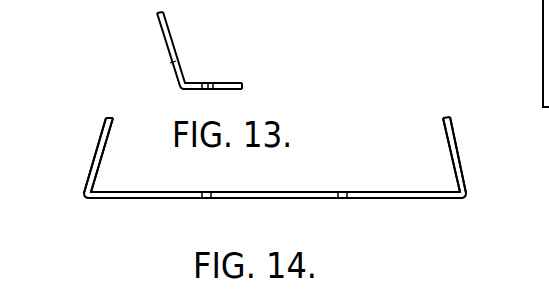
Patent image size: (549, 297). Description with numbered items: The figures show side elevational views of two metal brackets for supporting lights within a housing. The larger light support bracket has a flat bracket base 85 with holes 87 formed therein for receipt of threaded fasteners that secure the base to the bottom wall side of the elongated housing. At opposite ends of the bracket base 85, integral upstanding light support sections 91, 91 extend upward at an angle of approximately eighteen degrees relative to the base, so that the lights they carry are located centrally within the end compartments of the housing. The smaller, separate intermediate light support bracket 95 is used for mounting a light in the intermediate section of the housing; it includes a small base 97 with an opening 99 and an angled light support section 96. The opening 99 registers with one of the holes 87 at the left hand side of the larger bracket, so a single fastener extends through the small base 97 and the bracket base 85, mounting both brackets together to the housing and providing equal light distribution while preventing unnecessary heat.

In FIG. 14, the bracket base 85 is at (373, 198).
In FIG. 14, the holes 87 is at (202, 192).
In FIG. 14, the upstanding light support sections 91 is at (93, 164).
In FIG. 13, the intermediate light support bracket 95 is at (194, 66).
In FIG. 13, the light support section 96 is at (173, 67).
In FIG. 13, the small base 97 is at (227, 83).
In FIG. 13, the opening 99 is at (208, 83).